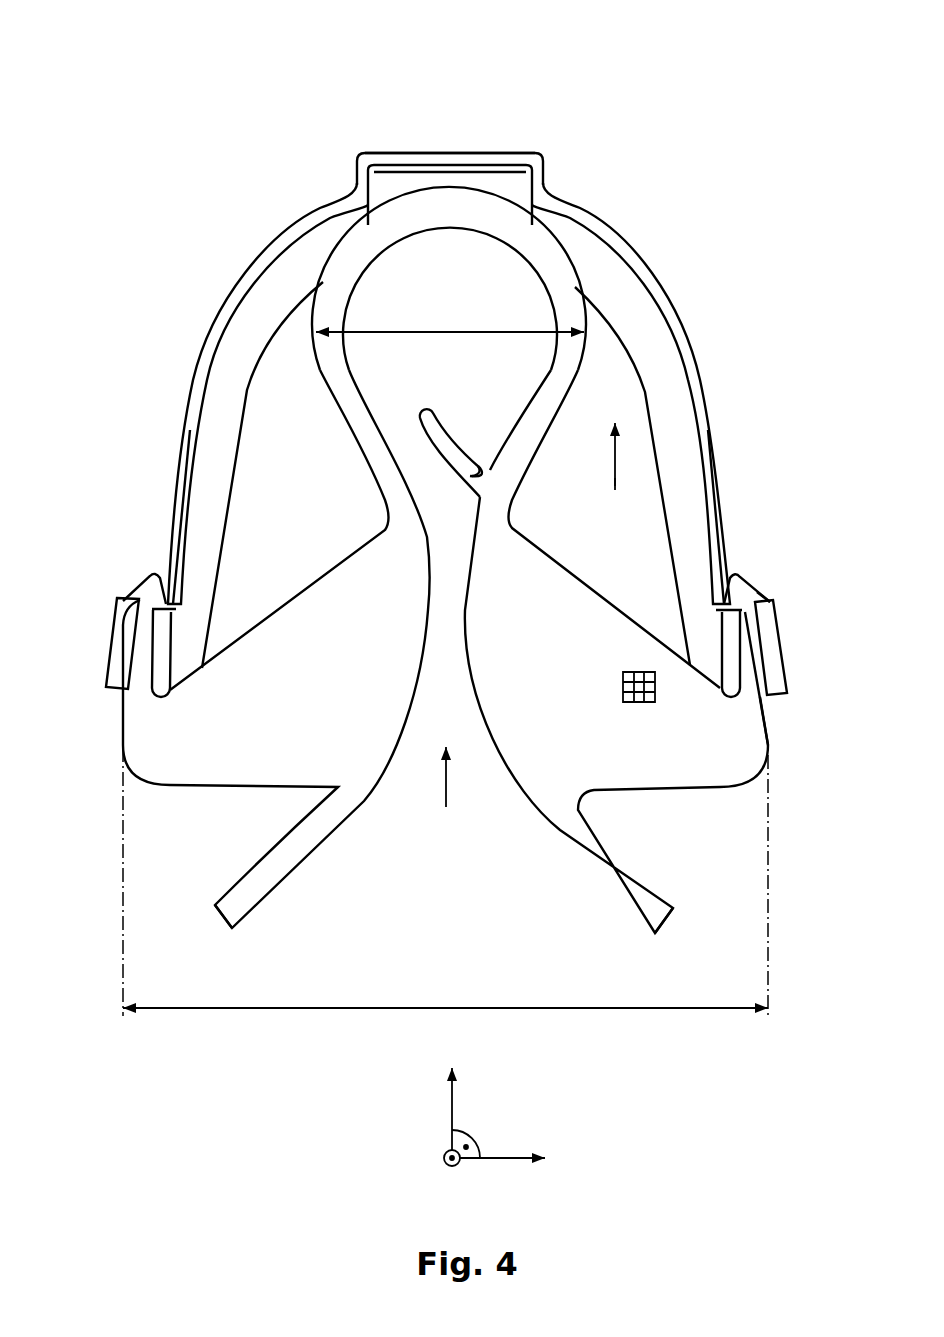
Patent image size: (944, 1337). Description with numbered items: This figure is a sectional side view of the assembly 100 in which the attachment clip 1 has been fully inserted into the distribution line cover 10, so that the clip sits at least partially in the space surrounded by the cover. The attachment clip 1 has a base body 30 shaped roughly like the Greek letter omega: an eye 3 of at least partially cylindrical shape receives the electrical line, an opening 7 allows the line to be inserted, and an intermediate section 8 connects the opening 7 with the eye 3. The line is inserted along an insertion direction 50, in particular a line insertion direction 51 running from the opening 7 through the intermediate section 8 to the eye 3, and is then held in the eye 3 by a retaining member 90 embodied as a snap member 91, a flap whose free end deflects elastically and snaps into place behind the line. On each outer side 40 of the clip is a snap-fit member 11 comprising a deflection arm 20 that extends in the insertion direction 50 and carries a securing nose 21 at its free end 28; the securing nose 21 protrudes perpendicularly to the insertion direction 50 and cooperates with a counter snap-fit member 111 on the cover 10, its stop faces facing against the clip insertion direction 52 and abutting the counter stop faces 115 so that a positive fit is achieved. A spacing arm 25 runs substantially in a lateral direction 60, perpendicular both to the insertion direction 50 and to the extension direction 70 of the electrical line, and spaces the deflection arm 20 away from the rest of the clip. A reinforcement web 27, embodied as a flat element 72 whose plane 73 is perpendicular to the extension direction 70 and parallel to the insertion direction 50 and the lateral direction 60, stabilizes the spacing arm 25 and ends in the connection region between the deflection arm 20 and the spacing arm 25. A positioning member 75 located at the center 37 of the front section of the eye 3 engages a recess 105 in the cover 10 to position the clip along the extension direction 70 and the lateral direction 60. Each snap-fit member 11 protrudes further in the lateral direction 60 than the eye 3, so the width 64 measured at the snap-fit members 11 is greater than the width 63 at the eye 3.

The device 100 is at (446, 616).
The center of a front section of the eye 37 is at (446, 112).
The recess 105 is at (530, 155).
The distribution line cover 10 is at (449, 350).
The attachment clip 1 is at (553, 277).
The eye 3 is at (570, 353).
The width at the eye 63 is at (452, 332).
The positioning member 75 is at (450, 185).
The retaining member 90 is at (447, 437).
The snap member 91 is at (473, 467).
The outer side 40 is at (566, 522).
The insertion direction 50 is at (607, 747).
The line insertion direction 51 is at (615, 480).
The clip insertion direction 52 is at (446, 790).
The intermediate section 8 is at (497, 523).
The snap-fit member 11 is at (151, 564).
The spacing arm 25 is at (125, 593).
The free end 28 is at (741, 565).
The securing nose 21 is at (766, 598).
The counter stop face 115 is at (127, 612).
The counter snap-fit member 111 is at (446, 646).
The deflection arm 20 is at (753, 663).
The base body 30 is at (336, 605).
The flat element 72 is at (561, 658).
The reinforcement web 27 is at (574, 693).
The plane 73 is at (640, 695).
The opening 7 is at (583, 890).
The width at the snap-fit members 64 is at (395, 1000).
The lateral direction 60 is at (507, 1162).
The extension direction 70 is at (454, 1148).